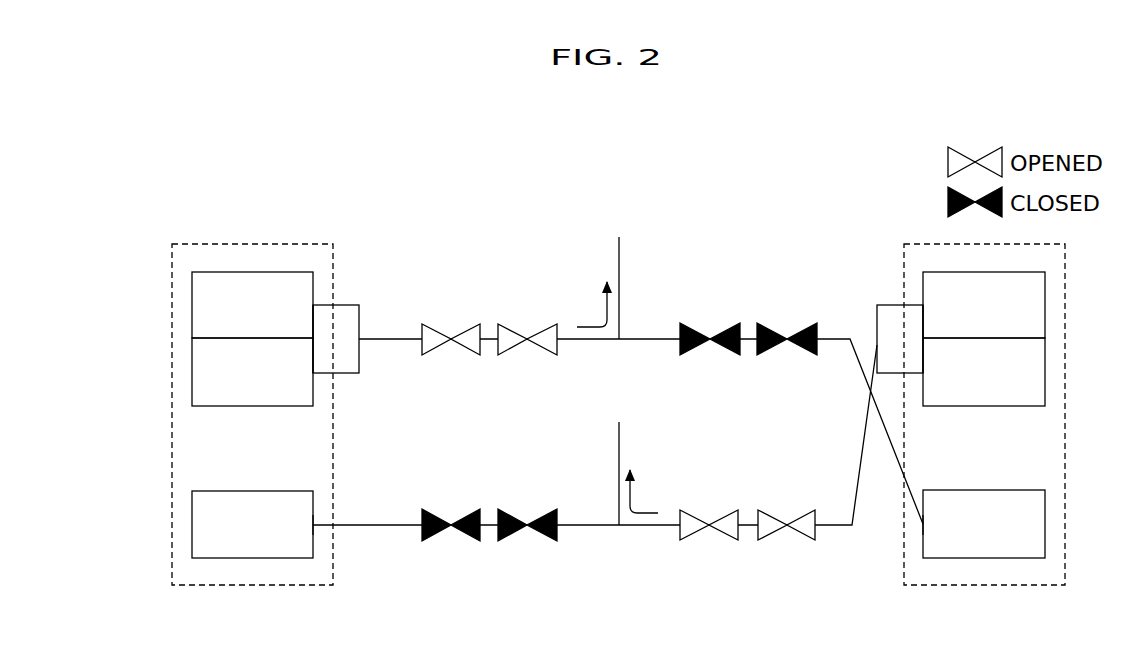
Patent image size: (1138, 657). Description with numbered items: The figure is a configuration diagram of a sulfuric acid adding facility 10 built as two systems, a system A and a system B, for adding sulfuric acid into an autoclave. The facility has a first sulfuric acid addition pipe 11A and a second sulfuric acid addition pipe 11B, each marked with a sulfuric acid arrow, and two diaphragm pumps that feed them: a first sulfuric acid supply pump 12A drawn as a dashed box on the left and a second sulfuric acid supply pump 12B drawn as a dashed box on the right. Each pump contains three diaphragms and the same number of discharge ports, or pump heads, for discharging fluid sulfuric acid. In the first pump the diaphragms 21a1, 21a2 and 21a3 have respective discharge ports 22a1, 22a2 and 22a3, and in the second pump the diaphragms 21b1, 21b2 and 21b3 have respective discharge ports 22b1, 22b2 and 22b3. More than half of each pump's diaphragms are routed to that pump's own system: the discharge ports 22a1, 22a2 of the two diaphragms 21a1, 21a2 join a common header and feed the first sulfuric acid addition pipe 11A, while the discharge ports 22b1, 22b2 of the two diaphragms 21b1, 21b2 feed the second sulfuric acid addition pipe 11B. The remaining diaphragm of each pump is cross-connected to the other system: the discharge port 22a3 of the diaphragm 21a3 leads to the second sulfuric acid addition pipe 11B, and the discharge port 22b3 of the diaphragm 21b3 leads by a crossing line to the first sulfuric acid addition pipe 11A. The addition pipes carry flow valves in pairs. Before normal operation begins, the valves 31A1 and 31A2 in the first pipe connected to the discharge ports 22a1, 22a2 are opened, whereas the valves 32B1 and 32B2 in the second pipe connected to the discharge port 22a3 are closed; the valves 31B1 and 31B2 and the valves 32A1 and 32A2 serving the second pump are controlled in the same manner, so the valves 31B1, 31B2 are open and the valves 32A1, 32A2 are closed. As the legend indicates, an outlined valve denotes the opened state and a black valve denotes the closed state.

The sulfuric acid adding facility 10 is at (453, 145).
The first sulfuric acid supply pump 12A is at (253, 587).
The second sulfuric acid supply pump 12B is at (995, 587).
The diaphragm 21a1 is at (192, 310).
The diaphragm 21a2 is at (192, 376).
The diaphragm 21a3 is at (192, 524).
The diaphragm 21b1 is at (1045, 309).
The diaphragm 21b2 is at (1045, 375).
The diaphragm 21b3 is at (1045, 525).
The discharge port 22a1 is at (318, 300).
The discharge port 22a2 is at (318, 377).
The discharge port 22a3 is at (317, 528).
The discharge port 22b1 is at (921, 299).
The discharge port 22b2 is at (921, 378).
The discharge port 22b3 is at (920, 528).
The first sulfuric acid addition pipe 11A is at (620, 267).
The second sulfuric acid addition pipe 11B is at (620, 449).
The valve 31A1 is at (433, 326).
The valve 31A2 is at (510, 326).
The valve 32A1 is at (692, 326).
The valve 32A2 is at (770, 326).
The valve 32B1 is at (452, 495).
The valve 32B2 is at (510, 511).
The valve 31B1 is at (692, 511).
The valve 31B2 is at (770, 511).